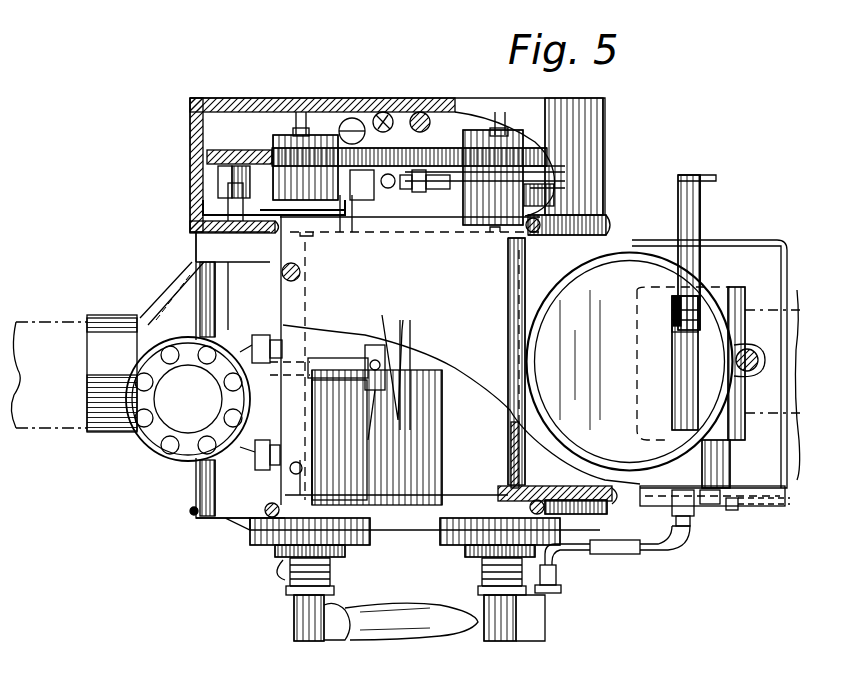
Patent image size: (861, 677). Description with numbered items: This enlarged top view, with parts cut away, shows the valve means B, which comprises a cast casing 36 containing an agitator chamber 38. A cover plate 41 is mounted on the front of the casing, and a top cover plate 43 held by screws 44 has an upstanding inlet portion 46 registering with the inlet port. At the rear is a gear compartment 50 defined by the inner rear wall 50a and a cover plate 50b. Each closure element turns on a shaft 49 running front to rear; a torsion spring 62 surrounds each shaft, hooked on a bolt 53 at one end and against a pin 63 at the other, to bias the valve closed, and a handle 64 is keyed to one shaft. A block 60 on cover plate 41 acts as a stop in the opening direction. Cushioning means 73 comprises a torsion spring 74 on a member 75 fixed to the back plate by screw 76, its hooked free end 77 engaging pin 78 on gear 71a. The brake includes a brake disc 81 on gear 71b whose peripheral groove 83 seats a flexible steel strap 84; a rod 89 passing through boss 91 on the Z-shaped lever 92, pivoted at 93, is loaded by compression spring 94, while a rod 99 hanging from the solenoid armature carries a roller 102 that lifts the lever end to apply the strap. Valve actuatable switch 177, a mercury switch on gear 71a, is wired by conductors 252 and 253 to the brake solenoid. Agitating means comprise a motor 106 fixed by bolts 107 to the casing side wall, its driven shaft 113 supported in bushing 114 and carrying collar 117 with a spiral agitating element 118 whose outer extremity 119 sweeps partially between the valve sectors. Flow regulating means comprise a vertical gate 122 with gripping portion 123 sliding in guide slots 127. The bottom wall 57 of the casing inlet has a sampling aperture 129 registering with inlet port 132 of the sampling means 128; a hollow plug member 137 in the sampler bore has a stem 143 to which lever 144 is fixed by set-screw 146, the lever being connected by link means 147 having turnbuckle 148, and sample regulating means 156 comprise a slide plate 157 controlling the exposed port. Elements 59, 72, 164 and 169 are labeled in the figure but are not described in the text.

The valve means B is at (117, 202).
The casing 36 is at (223, 238).
The agitator chamber 38 is at (463, 431).
The cover plate 41 is at (412, 510).
The cover plate 43 is at (447, 291).
The screws 44 is at (280, 271).
The upstanding inlet portion 46 is at (578, 265).
The shaft 49 is at (300, 120).
The gear compartment 50 is at (205, 174).
The inner rear wall 50a is at (196, 224).
The cover plate 50b is at (256, 100).
The screws 53 is at (548, 560).
The bottom wall 57 is at (587, 372).
The flange 59 is at (192, 514).
The block 60 is at (438, 490).
The torsion spring 62 is at (332, 568).
The pin 63 is at (286, 590).
The handle 64 is at (445, 629).
The gear 71a is at (284, 152).
The gear 71b is at (541, 122).
The bolt 72 is at (304, 126).
The cushioning means 73 is at (212, 172).
The torsion spring 74 is at (258, 178).
The member 75 is at (228, 200).
The screw 76 is at (242, 168).
The hooked free end portion 77 is at (230, 190).
The pin 78 is at (228, 168).
The brake disc 81 is at (552, 170).
The groove 83 is at (552, 195).
The flexible steel strap 84 is at (550, 178).
The rod 89 is at (440, 172).
The boss 91 is at (420, 195).
The Z-shaped lever member 92 is at (408, 192).
The pivot 93 is at (440, 192).
The compression spring 94 is at (390, 192).
The rod 99 is at (366, 205).
The roller 102 is at (338, 208).
The motor 106 is at (205, 399).
The bolts 107 is at (258, 336).
The driven shaft 113 is at (370, 350).
The bushing 114 is at (325, 368).
The collar 117 is at (376, 420).
The agitating element 118 is at (402, 398).
The outer extremity 119 is at (410, 380).
The vertical gate 122 is at (511, 447).
The transverse handle 123 is at (508, 292).
The guide slots 127 is at (522, 492).
The sampling means 128 is at (753, 292).
The sampling aperture 129 is at (672, 318).
The inlet port 132 is at (692, 358).
The hollow plug member 137 is at (722, 468).
The stem portion 143 is at (712, 505).
The lever 144 is at (690, 528).
The set-screw 146 is at (735, 506).
The link means 147 is at (655, 553).
The turnbuckle adjusting means 148 is at (612, 555).
The sample regulating means 156 is at (710, 197).
The slide plate 157 is at (690, 210).
The shaft 164 is at (325, 383).
The pipe 169 is at (125, 354).
The valve actuatable switch means 177 is at (412, 50).
The conductor 252 is at (385, 113).
The conductor 253 is at (421, 113).